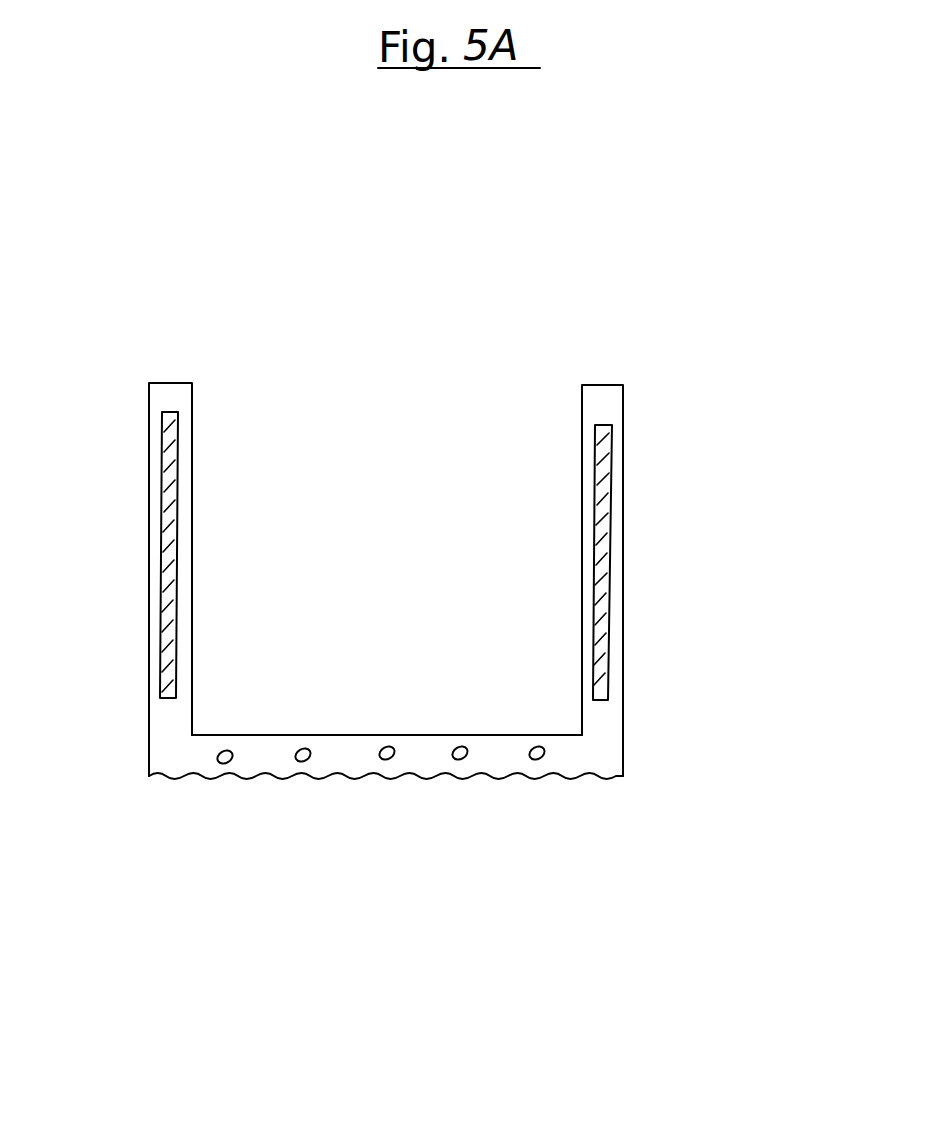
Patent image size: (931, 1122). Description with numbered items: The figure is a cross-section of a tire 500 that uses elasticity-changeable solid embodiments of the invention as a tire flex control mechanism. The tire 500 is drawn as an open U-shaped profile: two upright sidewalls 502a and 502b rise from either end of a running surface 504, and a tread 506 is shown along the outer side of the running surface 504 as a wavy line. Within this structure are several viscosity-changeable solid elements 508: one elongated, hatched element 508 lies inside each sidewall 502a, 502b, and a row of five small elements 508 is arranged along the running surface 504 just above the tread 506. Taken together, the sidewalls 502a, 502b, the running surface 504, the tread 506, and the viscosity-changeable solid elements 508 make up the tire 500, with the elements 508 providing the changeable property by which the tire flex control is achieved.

The tire 500 is at (820, 896).
The sidewall 502a is at (624, 398).
The sidewall 502b is at (156, 388).
The running surface 504 is at (172, 755).
The tread 506 is at (583, 772).
The viscosity-changeable solid element 508 is at (165, 510).